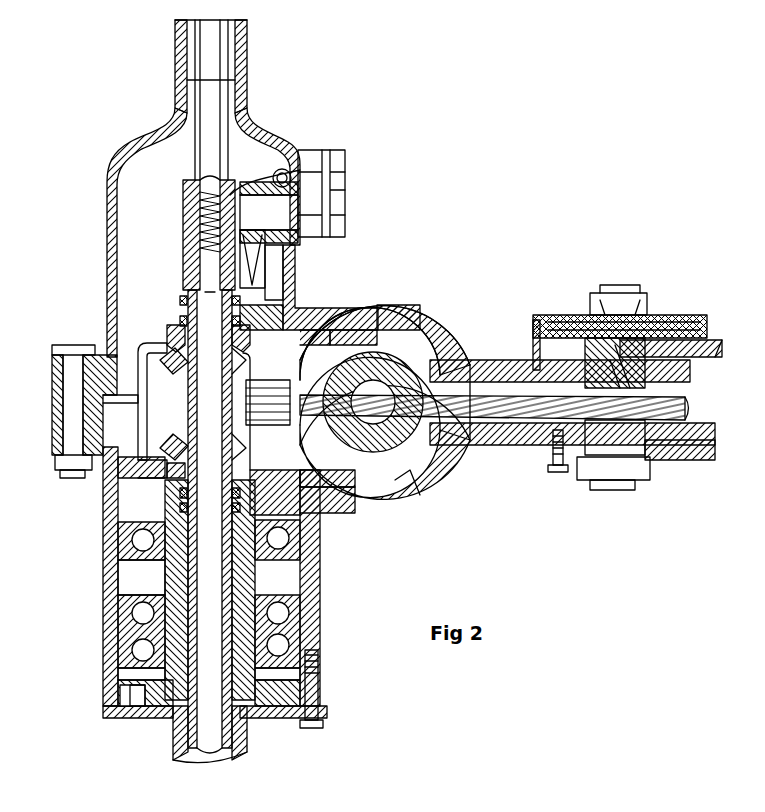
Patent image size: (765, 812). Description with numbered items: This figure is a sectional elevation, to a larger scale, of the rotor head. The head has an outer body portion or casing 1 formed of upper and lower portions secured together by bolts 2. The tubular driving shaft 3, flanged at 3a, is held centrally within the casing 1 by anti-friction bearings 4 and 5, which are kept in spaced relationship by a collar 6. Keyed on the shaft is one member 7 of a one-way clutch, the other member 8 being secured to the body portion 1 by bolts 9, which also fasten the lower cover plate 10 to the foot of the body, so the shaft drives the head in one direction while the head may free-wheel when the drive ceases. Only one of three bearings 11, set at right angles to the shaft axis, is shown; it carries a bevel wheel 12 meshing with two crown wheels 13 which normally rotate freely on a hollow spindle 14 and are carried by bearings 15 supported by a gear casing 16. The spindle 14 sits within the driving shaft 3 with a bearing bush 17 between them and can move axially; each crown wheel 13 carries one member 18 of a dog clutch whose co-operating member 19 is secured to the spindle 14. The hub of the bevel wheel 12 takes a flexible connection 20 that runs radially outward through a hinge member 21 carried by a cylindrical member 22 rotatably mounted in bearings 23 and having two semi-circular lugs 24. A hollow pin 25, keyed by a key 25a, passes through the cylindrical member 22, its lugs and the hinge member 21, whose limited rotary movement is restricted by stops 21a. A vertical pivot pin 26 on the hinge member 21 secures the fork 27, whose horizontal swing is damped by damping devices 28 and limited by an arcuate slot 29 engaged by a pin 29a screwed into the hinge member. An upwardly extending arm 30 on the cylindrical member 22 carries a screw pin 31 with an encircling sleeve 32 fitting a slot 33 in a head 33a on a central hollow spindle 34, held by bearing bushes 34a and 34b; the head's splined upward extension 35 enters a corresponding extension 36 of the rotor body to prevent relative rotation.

The casing 1 is at (310, 610).
The bolts 2 is at (73, 365).
The driving shaft 3 is at (240, 748).
The flange 3a is at (140, 465).
The anti-friction bearing 4 is at (143, 540).
The anti-friction bearing 5 is at (143, 628).
The collar 6 is at (290, 585).
The one-way clutch member 7 is at (138, 698).
The one-way clutch member 8 is at (118, 694).
The bolts 9 is at (312, 688).
The lower cover plate 10 is at (110, 712).
The bearing 11 is at (330, 490).
The bevel wheel 12 is at (240, 380).
The crown wheel 13 is at (160, 368).
The hollow spindle 14 is at (170, 672).
The bearings 15 is at (170, 335).
The gear casing 16 is at (295, 300).
The bearing bush 17 is at (265, 312).
The dog clutch member 18 is at (180, 321).
The dog clutch member 19 is at (180, 300).
The flexible connection 20 is at (536, 350).
The hinge member 21 is at (500, 440).
The stops 21a is at (455, 368).
The cylindrical member 22 is at (350, 336).
The bearings 23 is at (385, 318).
The semi-circular lugs 24 is at (400, 318).
The hollow pin 25 is at (400, 435).
The key 25a is at (430, 404).
The vertical pivot pin 26 is at (640, 440).
The fork 27 is at (718, 345).
The damping devices 28 is at (540, 318).
The arcuate slot 29 is at (558, 472).
The pin 29a is at (555, 460).
The arm 30 is at (338, 220).
The screw pin 31 is at (255, 212).
The sleeve 32 is at (290, 175).
The slot 33 is at (252, 262).
The head 33a is at (235, 192).
The central hollow spindle 34 is at (200, 218).
The bearing bush 34a is at (180, 290).
The bearing bush 34b is at (172, 575).
The upward extension 35 is at (210, 105).
The extension 36 is at (235, 45).